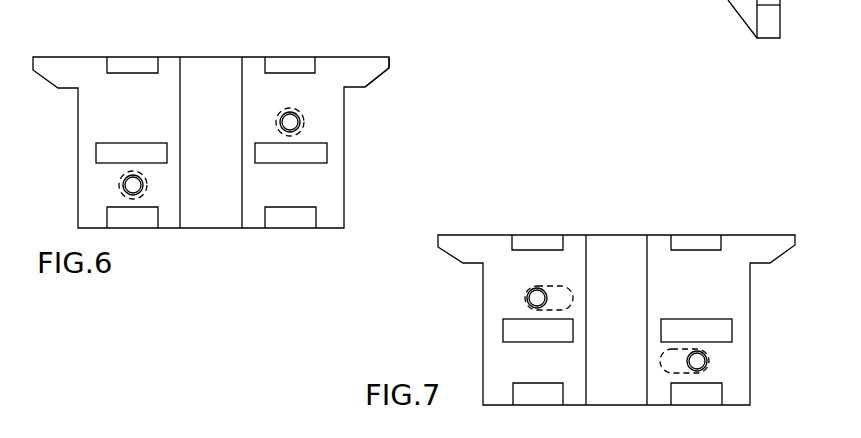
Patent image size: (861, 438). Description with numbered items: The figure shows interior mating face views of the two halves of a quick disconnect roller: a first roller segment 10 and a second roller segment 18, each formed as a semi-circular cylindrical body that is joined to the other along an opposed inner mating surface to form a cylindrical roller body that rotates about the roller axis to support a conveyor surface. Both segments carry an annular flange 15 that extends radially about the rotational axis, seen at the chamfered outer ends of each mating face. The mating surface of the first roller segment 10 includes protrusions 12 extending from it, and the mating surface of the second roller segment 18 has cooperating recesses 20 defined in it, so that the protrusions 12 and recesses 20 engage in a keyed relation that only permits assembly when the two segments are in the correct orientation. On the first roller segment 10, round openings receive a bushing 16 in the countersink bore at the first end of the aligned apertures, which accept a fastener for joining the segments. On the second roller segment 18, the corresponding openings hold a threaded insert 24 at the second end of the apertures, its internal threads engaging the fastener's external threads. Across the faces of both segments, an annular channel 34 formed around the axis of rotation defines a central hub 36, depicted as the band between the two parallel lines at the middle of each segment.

In FIG. 6, the first roller segment 10 is at (86, 57).
In FIG. 6, the protrusion 12 is at (110, 152).
In FIG. 6, the annular flange 15 is at (373, 68).
In FIG. 6, the bushing 16 is at (118, 182).
In FIG. 7, the second roller segment 18 is at (490, 235).
In FIG. 7, the recess 20 is at (517, 331).
In FIG. 7, the threaded insert 24 is at (527, 295).
In FIG. 6, the annular channel 34 is at (305, 65).
In FIG. 7, the annular channel 34 is at (706, 245).
In FIG. 6, the hub 36 is at (251, 55).
In FIG. 7, the hub 36 is at (654, 232).